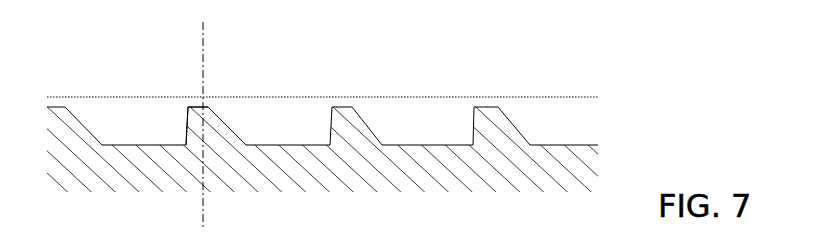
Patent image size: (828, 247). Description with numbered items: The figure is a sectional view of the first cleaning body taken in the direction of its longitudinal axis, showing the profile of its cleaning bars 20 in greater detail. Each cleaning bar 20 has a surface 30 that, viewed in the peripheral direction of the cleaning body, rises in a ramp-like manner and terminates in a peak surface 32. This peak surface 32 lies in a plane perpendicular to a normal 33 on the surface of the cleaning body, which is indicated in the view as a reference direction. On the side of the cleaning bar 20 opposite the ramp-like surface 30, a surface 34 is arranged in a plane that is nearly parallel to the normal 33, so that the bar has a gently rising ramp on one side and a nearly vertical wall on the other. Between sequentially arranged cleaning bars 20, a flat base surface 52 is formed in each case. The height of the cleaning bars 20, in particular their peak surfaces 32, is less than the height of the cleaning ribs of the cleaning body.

The cleaning bar 20 is at (195, 106).
The surface 30 is at (226, 123).
The peak surface 32 is at (211, 127).
The normal 33 is at (205, 208).
The surface 34 is at (139, 95).
The flat base surface 52 is at (292, 143).